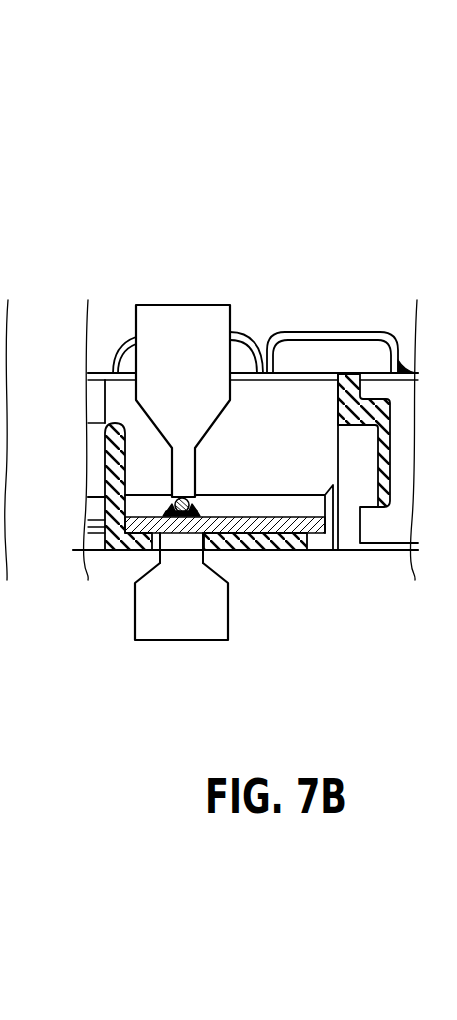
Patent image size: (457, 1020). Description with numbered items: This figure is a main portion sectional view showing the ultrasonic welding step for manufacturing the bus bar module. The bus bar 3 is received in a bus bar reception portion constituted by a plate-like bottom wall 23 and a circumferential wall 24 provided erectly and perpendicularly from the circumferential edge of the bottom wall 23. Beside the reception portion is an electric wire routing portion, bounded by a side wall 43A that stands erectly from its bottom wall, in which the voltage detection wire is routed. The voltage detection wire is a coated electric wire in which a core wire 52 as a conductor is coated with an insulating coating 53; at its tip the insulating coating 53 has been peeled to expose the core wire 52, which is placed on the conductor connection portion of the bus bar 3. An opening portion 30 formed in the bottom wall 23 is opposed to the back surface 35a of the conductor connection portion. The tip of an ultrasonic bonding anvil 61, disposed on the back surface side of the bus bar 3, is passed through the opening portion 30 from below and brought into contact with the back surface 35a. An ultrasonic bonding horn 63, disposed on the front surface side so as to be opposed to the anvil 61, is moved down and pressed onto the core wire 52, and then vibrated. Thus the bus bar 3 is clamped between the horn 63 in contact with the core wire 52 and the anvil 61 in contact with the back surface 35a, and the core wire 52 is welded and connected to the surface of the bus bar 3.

The ultrasonic bonding horn 63 is at (167, 323).
The circumferential wall 24 is at (135, 443).
The core wire 52 is at (187, 497).
The insulating coating 53 is at (160, 498).
The bottom wall 23 is at (234, 495).
The side wall 43A is at (313, 393).
The bus bar 3 is at (292, 519).
The opening portion 30 is at (205, 578).
The back surface 35a is at (178, 540).
The ultrasonic bonding anvil 61 is at (183, 627).